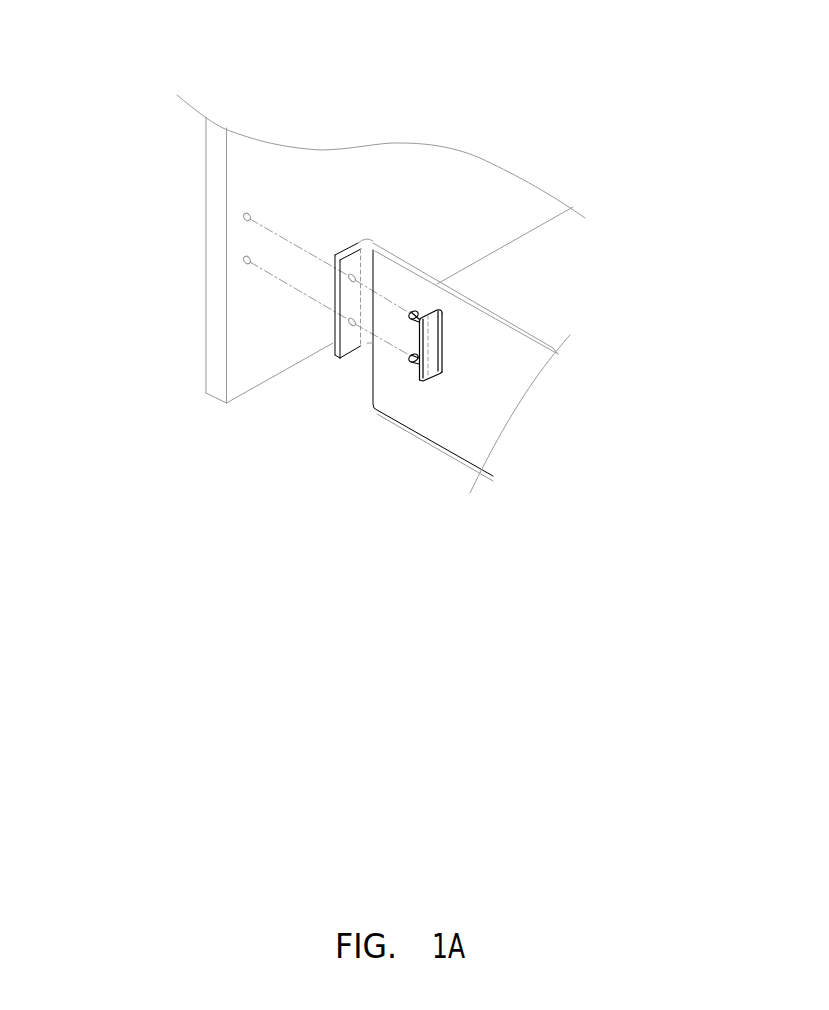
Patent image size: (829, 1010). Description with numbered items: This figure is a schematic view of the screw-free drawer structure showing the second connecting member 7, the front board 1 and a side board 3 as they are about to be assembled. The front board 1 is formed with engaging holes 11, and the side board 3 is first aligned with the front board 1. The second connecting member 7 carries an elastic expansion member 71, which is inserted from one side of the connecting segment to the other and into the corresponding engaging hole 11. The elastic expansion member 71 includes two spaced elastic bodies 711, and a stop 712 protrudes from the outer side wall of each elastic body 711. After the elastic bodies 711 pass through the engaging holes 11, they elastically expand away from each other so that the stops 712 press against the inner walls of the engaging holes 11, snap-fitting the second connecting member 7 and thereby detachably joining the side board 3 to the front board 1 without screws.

The front board 1 is at (257, 170).
The engaging hole 11 is at (243, 216).
The second connecting member 7 is at (440, 343).
The elastic expansion member 71 is at (567, 299).
The elastic body 711 is at (433, 342).
The stop 712 is at (420, 310).
The side board 3 is at (445, 407).